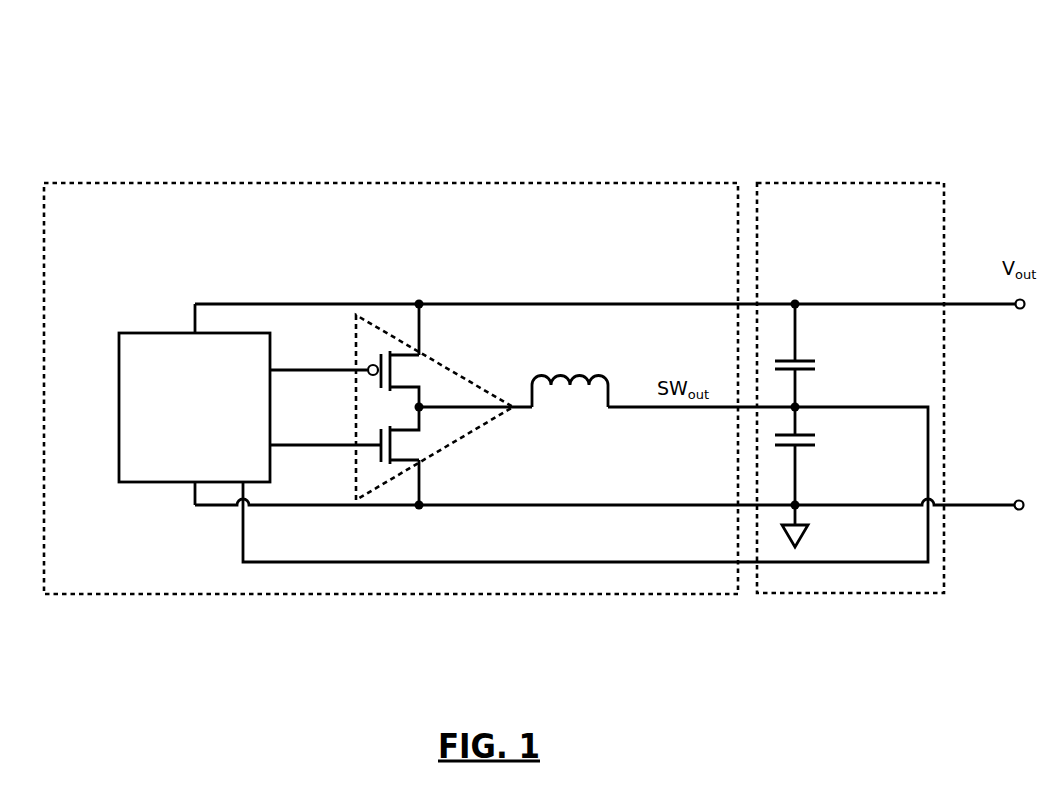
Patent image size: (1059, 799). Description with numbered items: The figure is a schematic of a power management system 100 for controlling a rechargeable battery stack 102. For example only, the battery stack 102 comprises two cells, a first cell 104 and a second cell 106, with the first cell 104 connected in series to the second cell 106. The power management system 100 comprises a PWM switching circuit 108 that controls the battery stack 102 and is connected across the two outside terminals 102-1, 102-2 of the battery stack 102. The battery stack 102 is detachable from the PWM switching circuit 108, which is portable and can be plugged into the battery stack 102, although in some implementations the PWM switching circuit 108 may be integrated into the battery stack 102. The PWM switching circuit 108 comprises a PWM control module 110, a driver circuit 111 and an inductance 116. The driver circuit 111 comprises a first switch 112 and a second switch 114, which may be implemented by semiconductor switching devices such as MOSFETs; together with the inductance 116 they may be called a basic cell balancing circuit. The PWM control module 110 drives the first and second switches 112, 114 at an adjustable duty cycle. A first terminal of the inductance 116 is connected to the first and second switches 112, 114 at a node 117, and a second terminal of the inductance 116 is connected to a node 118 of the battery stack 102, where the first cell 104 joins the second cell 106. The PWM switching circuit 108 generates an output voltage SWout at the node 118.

The power management system 100 is at (528, 72).
The rechargeable battery stack 102 is at (854, 183).
The outside terminal 102-1 is at (797, 297).
The outside terminal 102-2 is at (805, 511).
The first cell 104 is at (804, 363).
The second cell 106 is at (811, 447).
The PWM switching circuit 108 is at (385, 183).
The PWM control module 110 is at (119, 407).
The driver circuit 111 is at (484, 385).
The first switch 112 is at (418, 364).
The second switch 114 is at (428, 451).
The inductance 116 is at (578, 381).
The node 117 is at (398, 408).
The node 118 is at (805, 401).